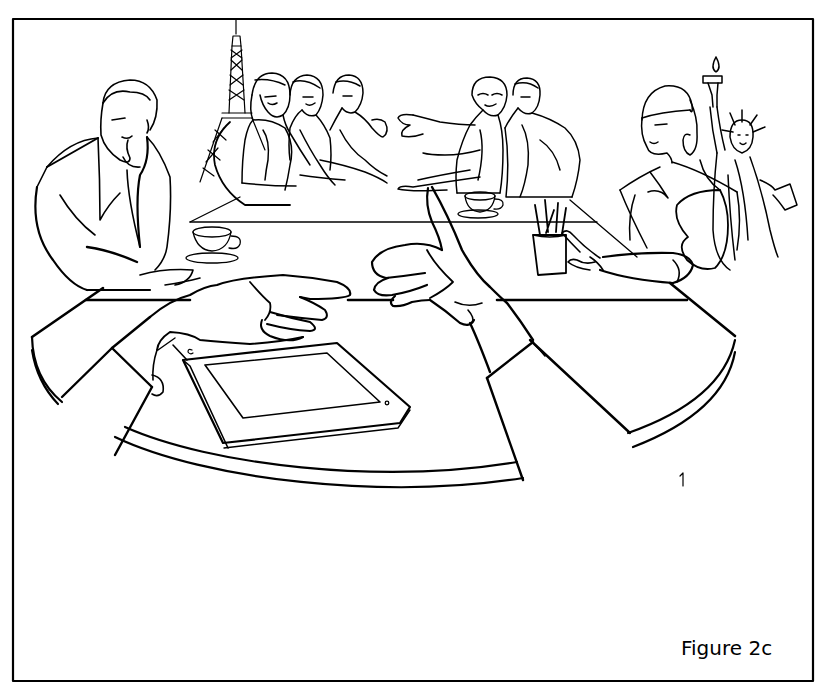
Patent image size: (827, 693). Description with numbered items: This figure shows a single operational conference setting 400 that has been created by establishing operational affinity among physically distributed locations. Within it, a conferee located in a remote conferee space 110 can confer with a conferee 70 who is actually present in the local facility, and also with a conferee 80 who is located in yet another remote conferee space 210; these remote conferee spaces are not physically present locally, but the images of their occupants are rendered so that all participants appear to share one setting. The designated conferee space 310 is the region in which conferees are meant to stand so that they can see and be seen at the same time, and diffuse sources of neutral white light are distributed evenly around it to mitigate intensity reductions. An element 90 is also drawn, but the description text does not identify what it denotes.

The conferee 70 is at (679, 170).
The conferee 80 is at (293, 112).
The user 90 is at (312, 333).
The remote conferee space 110 is at (383, 385).
The conferee space 210 is at (404, 187).
The conferee space 310 is at (413, 227).
The operational conference setting 400 is at (13, 528).